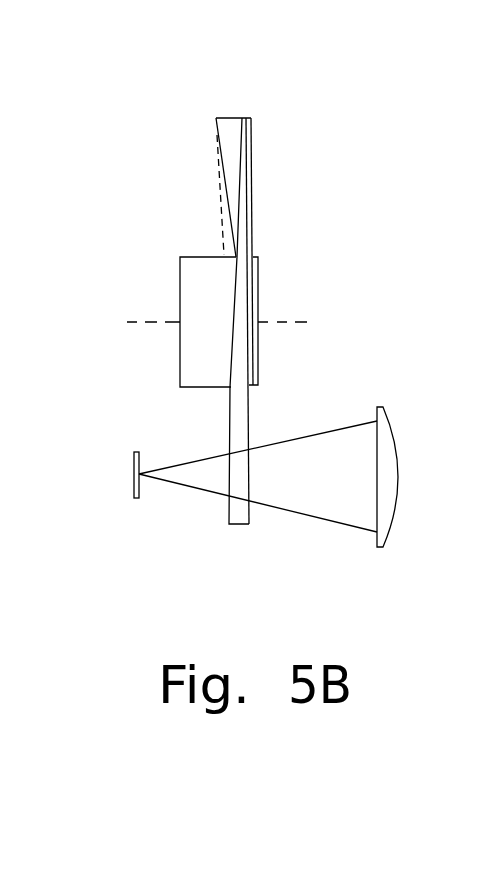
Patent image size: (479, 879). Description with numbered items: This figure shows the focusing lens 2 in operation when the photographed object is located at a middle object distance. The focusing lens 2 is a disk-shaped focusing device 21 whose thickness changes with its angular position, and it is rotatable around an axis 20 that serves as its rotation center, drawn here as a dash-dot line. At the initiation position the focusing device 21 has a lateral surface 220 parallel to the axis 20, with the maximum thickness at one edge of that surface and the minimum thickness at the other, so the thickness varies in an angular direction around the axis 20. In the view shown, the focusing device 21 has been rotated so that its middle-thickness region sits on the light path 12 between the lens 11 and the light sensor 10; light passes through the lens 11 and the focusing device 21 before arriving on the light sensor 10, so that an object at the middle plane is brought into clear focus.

The focusing lens 2 is at (246, 283).
The light sensor 10 is at (133, 468).
The lens 11 is at (388, 453).
The light path 12 is at (303, 513).
The axis 20 is at (283, 322).
The focusing device 21 is at (273, 141).
The lateral surface 220 is at (230, 128).